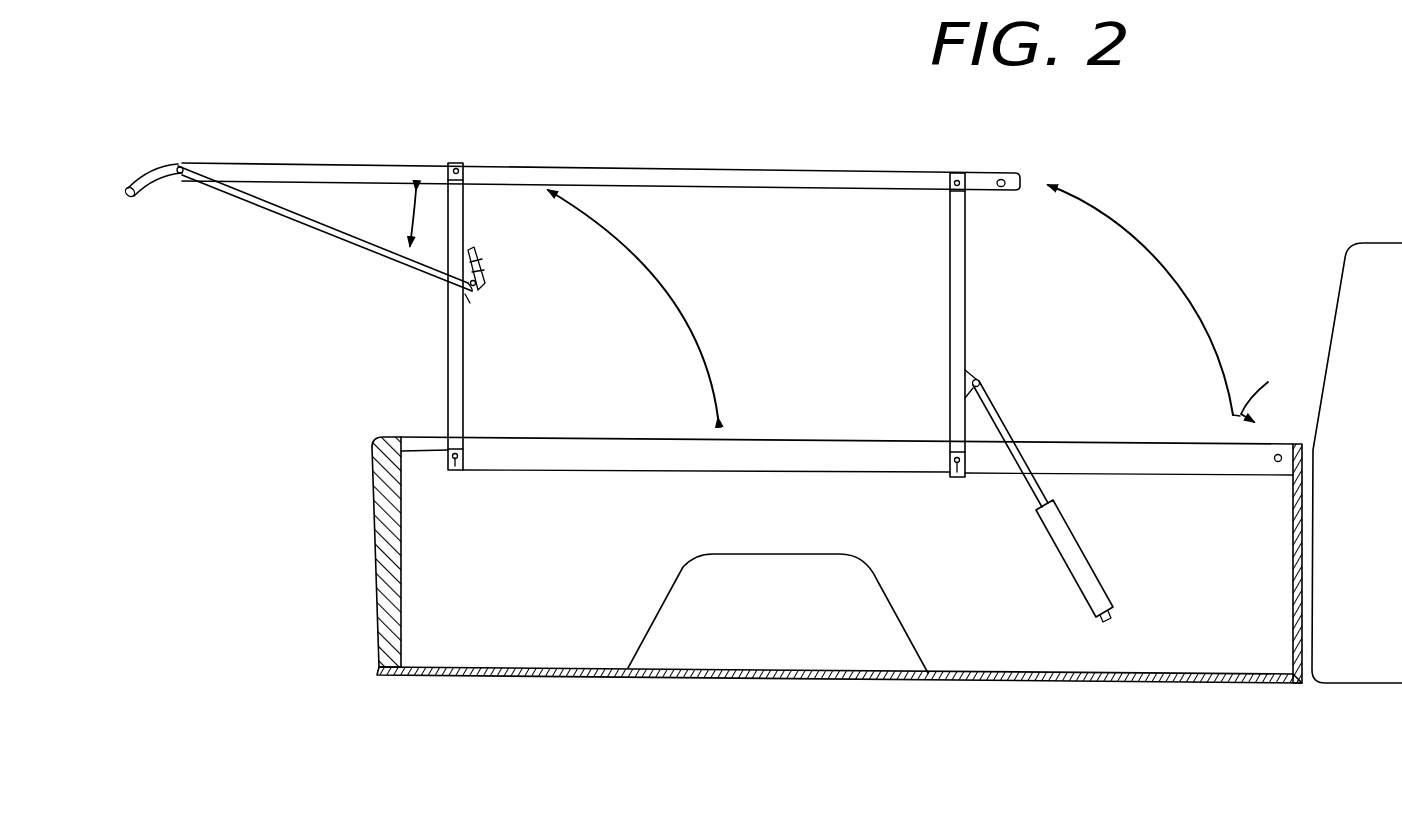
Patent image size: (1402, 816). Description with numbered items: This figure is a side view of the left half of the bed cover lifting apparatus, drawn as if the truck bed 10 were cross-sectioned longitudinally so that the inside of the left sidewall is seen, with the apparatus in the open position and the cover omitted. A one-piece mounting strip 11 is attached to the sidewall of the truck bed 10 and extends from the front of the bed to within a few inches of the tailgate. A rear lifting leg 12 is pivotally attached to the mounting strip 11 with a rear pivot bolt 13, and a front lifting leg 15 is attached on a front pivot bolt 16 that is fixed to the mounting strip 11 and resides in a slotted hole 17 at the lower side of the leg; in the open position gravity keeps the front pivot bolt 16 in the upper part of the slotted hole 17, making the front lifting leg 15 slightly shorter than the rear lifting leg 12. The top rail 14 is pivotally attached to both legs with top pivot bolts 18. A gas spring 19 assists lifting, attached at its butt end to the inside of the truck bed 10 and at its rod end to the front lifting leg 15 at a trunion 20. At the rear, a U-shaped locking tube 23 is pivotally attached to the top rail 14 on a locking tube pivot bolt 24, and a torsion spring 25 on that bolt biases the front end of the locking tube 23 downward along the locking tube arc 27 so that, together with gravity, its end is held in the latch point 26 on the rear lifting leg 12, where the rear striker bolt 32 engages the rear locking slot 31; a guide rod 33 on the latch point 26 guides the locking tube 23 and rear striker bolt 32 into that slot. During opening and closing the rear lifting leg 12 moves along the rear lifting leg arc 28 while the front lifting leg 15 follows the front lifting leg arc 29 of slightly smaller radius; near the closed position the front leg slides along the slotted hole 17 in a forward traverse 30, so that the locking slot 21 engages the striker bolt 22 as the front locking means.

The truck bed 10 is at (352, 528).
The mounting strip 11 is at (625, 455).
The rear lifting leg 12 is at (450, 345).
The rear pivot bolt 13 is at (453, 468).
The top rail 14 is at (632, 180).
The front lifting leg 15 is at (955, 340).
The front pivot bolt 16 is at (948, 460).
The slotted hole 17 is at (956, 478).
The top pivot bolt 18 is at (463, 168).
The gas spring 19 is at (1093, 585).
The trunion 20 is at (985, 383).
The locking slot 21 is at (1005, 191).
The striker bolt 22 is at (1275, 466).
The locking tube 23 is at (132, 198).
The locking tube pivot bolt 24 is at (186, 166).
The torsion spring 25 is at (178, 167).
The latch point 26 is at (470, 255).
The locking tube arc 27 is at (405, 212).
The rear lifting leg arc 28 is at (700, 300).
The front lifting leg arc 29 is at (1206, 318).
The forward traverse 30 is at (1267, 385).
The rear locking slot 31 is at (482, 270).
The rear striker bolt 32 is at (477, 296).
The guide rod 33 is at (482, 260).